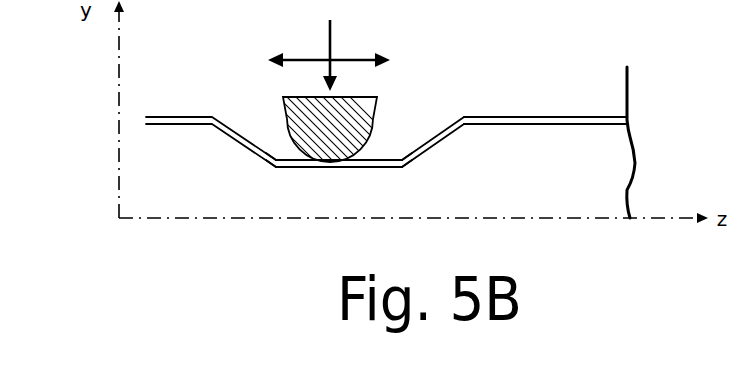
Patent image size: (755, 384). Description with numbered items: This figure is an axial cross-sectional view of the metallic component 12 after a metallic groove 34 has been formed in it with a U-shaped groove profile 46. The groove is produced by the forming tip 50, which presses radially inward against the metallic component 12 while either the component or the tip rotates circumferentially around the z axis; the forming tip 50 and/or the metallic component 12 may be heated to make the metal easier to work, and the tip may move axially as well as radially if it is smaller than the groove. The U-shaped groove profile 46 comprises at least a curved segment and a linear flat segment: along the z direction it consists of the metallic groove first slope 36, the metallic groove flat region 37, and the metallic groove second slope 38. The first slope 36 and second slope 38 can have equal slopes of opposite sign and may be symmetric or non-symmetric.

The metallic component 12 is at (543, 115).
The metallic groove 34 is at (370, 172).
The metallic groove first slope 36 is at (438, 142).
The metallic groove flat region 37 is at (315, 168).
The metallic groove second slope 38 is at (238, 143).
The U-shaped groove profile 46 is at (410, 168).
The forming tip 50 is at (284, 107).